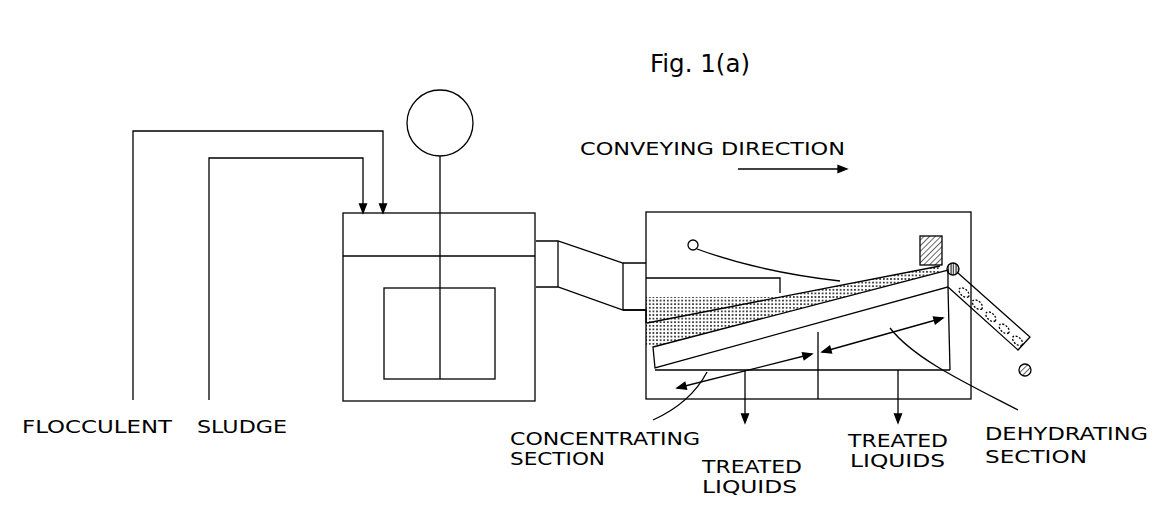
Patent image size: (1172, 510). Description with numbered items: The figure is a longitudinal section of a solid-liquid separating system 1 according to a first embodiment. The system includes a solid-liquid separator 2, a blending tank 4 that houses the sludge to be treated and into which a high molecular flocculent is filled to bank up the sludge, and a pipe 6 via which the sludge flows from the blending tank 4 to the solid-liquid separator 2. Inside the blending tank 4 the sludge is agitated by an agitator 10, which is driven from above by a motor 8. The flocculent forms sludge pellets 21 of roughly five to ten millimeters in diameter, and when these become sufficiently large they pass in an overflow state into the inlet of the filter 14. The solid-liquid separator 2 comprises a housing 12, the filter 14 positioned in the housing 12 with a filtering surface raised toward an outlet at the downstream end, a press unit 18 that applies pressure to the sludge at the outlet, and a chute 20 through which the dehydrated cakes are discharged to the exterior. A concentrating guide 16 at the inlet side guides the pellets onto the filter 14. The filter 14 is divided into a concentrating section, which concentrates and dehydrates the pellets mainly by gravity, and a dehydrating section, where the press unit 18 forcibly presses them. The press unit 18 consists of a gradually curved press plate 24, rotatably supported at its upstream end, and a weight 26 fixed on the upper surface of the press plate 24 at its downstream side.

The solid-liquid separating system 1 is at (865, 147).
The solid-liquid separator 2 is at (832, 208).
The blending tank 4 is at (480, 213).
The pipe 6 is at (585, 247).
The motor 8 is at (461, 98).
The agitator 10 is at (410, 364).
The housing 12 is at (970, 243).
The filter 14 is at (780, 333).
The concentrating guide 16 is at (680, 278).
The press unit 18 is at (862, 272).
The chute 20 is at (1013, 318).
The sludge pellets 21 is at (645, 316).
The press plate 24 is at (755, 268).
The weight 26 is at (940, 235).